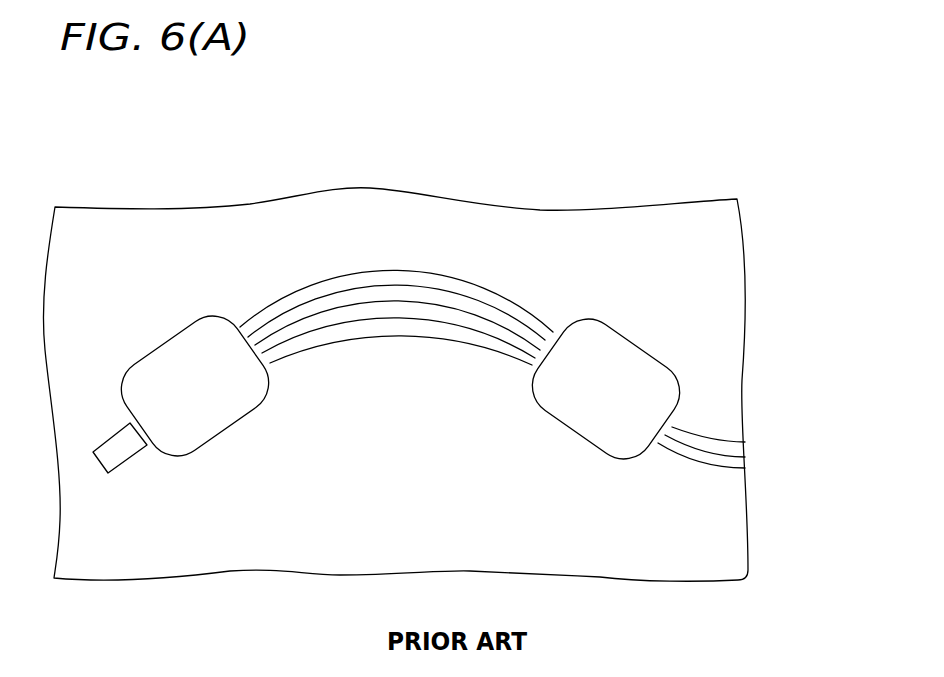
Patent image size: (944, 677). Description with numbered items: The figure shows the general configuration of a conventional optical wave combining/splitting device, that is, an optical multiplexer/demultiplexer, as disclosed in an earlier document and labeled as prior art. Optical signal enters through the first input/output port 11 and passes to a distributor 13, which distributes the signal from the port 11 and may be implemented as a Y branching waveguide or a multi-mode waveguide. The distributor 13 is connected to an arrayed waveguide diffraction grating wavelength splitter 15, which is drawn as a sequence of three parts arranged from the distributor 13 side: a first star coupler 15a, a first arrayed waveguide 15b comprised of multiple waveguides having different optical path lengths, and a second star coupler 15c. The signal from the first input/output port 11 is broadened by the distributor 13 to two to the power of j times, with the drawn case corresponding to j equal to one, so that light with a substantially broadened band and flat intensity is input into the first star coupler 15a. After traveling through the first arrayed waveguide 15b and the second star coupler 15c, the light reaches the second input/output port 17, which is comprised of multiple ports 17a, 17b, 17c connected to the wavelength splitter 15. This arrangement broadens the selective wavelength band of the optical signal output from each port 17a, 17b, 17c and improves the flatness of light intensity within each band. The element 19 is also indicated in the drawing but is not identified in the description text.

The first input/output port 11 is at (107, 472).
The distributor 13 is at (120, 450).
The arrayed waveguide diffraction grating wavelength splitter 15 is at (401, 262).
The first star coupler 15a is at (222, 327).
The first arrayed waveguide 15b is at (396, 253).
The second star coupler 15c is at (590, 328).
The second input/output port 17 is at (765, 437).
The port of second input/output port 17a is at (748, 443).
The port of second input/output port 17b is at (750, 458).
The port of second input/output port 17c is at (739, 471).
The cover layer 19 is at (713, 537).